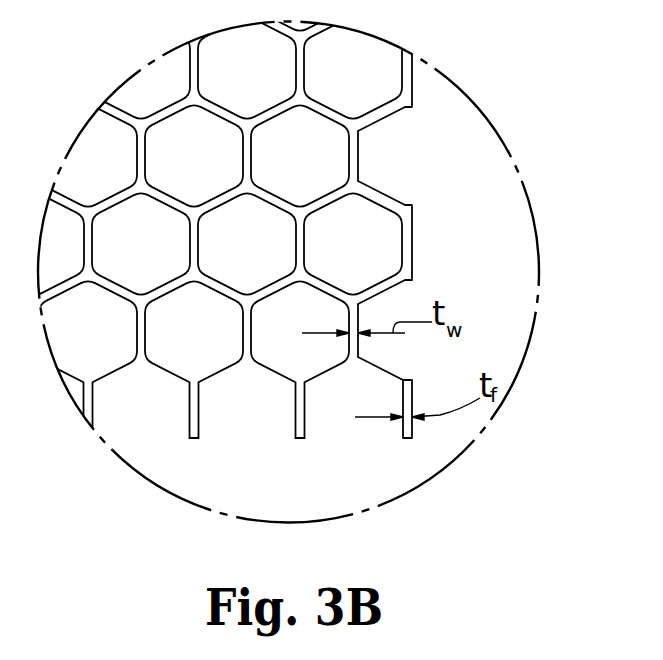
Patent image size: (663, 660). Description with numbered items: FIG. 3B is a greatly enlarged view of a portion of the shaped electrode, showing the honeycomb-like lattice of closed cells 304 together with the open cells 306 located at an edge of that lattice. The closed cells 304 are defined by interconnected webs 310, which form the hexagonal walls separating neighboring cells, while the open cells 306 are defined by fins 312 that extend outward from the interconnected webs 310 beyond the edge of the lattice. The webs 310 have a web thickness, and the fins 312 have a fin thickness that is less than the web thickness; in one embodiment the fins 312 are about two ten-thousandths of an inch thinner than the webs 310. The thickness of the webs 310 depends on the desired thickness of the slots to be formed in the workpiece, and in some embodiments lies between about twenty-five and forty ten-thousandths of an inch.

The closed cell 304 is at (378, 87).
The open cell 306 is at (332, 408).
The interconnected web 310 is at (388, 219).
The fin 312 is at (319, 410).